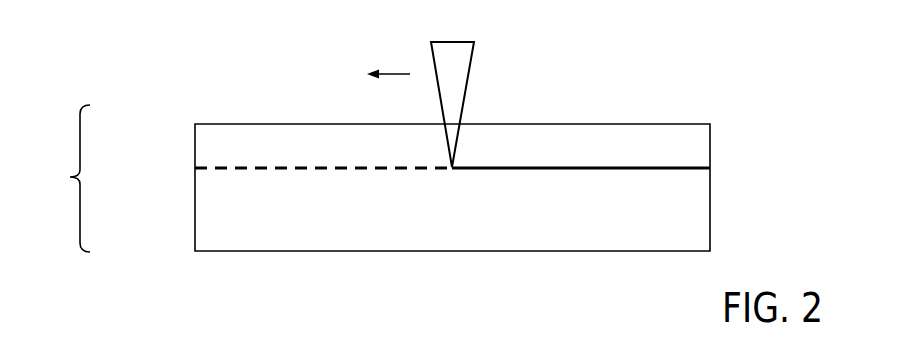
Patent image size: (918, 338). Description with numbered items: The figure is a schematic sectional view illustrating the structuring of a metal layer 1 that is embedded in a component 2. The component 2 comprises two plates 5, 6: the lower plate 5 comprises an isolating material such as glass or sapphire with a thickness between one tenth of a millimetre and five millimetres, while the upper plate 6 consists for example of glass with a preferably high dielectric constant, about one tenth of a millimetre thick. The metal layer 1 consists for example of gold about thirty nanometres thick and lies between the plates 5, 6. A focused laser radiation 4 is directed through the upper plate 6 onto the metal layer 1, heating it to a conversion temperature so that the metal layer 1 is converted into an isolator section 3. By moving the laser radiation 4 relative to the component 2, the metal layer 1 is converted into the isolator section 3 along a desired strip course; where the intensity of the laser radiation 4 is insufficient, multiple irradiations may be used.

The metal layer 1 is at (213, 168).
The component 2 is at (62, 178).
The isolator section 3 is at (685, 170).
The focused laser radiation 4 is at (449, 79).
The lower plate 5 is at (467, 233).
The upper plate 6 is at (288, 138).